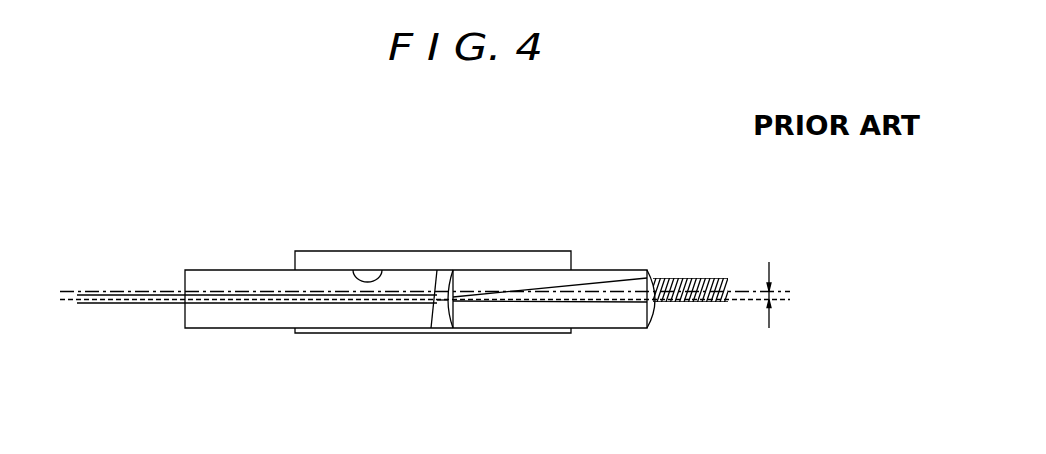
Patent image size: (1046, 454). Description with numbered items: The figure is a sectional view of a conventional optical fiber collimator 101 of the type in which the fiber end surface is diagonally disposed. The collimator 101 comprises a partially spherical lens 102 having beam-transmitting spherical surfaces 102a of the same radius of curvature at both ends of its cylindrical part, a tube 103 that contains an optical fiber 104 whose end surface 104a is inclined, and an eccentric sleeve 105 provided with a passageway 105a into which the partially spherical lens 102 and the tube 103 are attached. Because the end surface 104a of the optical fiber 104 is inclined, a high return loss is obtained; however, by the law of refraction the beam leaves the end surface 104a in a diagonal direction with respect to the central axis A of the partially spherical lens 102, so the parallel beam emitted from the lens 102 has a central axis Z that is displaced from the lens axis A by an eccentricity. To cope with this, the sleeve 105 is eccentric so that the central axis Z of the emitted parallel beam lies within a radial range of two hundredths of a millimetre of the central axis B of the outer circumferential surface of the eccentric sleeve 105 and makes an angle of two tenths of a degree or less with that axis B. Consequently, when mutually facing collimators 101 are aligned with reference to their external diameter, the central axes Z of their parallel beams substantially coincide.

The optical fiber collimator 101 is at (497, 197).
The partially spherical lens 102 is at (602, 270).
The beam-transmitting spherical surface 102a is at (657, 313).
The tube 103 is at (255, 278).
The optical fiber 104 is at (150, 292).
The end surface 104a is at (441, 285).
The eccentric sleeve 105 is at (393, 255).
The passageway 105a is at (355, 272).
The central axis of the partially spherical lens A is at (777, 300).
The central axis of the outer circumferential surface of the eccentric sleeve B is at (777, 292).